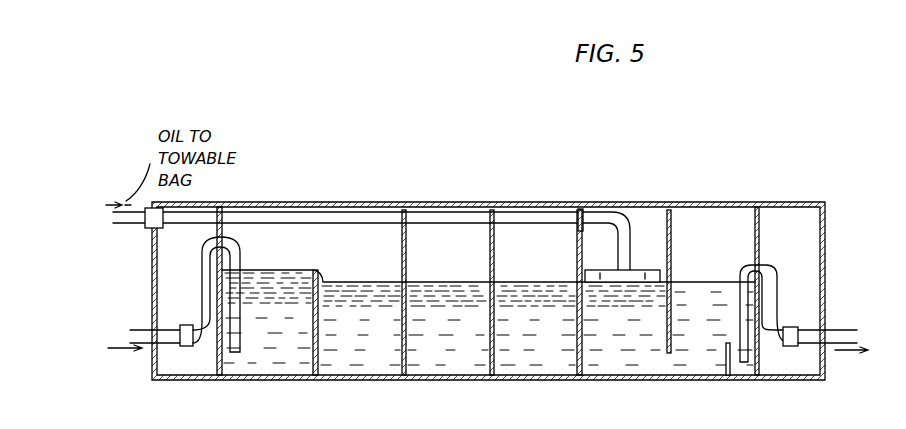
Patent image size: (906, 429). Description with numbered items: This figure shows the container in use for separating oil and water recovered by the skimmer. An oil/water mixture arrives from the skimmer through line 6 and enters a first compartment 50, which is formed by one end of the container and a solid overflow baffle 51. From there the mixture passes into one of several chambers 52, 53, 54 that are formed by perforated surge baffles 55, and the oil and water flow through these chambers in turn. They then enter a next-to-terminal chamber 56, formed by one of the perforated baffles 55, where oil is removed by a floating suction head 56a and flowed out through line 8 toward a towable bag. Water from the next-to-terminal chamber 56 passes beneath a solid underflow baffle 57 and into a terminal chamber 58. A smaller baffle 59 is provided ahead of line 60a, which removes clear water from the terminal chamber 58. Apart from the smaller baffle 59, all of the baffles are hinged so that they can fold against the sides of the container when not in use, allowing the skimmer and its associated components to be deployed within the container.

The line 6 is at (188, 329).
The line 8 is at (313, 221).
The first compartment 50 is at (273, 352).
The solid overflow baffle 51 is at (316, 350).
The chamber 52 is at (378, 352).
The chamber 53 is at (444, 352).
The chamber 54 is at (527, 352).
The perforated surge baffles 55 is at (490, 256).
The next-to-terminal chamber 56 is at (608, 345).
The floating suction head 56a is at (636, 268).
The solid underflow baffle 57 is at (672, 255).
The terminal chamber 58 is at (692, 355).
The smaller baffle 59 is at (731, 356).
The line 60a is at (737, 337).